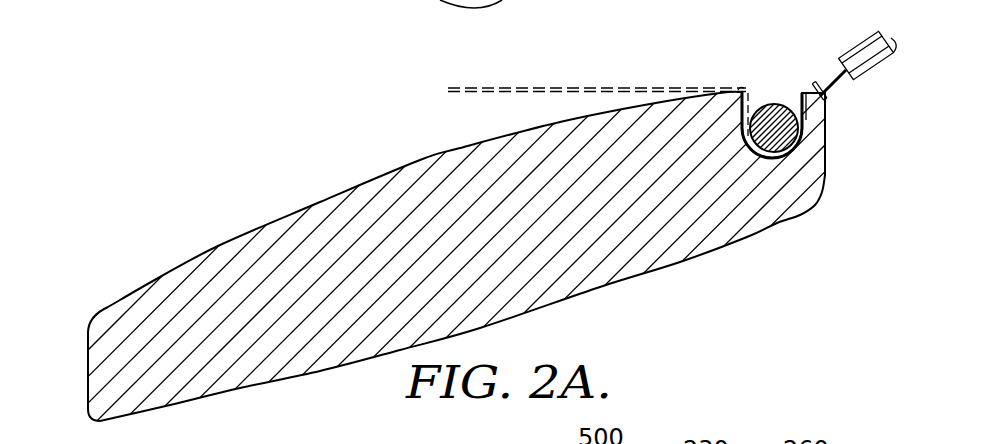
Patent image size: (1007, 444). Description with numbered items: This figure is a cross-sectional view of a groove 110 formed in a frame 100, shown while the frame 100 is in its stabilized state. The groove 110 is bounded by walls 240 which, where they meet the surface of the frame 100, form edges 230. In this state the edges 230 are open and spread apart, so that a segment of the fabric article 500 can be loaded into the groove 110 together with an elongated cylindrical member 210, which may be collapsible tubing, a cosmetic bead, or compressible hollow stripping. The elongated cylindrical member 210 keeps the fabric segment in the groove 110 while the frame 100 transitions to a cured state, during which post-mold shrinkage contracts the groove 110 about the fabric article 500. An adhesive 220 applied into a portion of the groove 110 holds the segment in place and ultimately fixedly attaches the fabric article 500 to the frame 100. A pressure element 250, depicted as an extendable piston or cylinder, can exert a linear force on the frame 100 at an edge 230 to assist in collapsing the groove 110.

The frame 100 is at (317, 149).
The groove 110 is at (809, 57).
The elongated cylindrical member 210 is at (766, 106).
The adhesive 220 is at (772, 159).
The edges 230 is at (740, 88).
The walls 240 is at (806, 112).
The pressure element 250 is at (864, 34).
The fabric article 500 is at (549, 87).